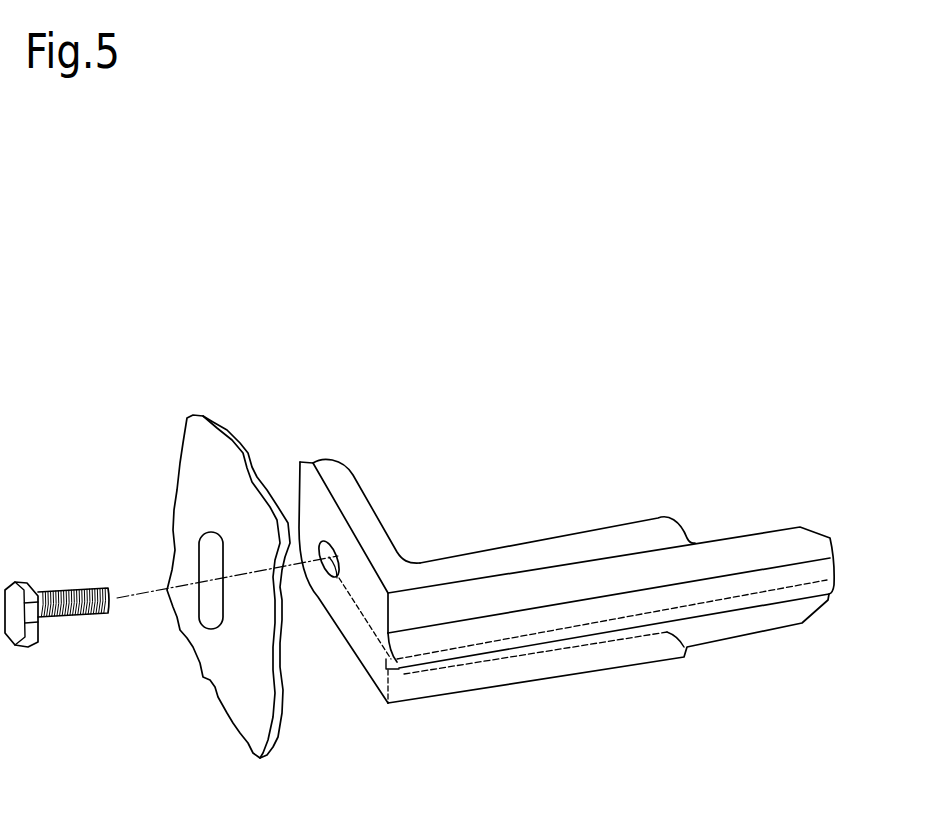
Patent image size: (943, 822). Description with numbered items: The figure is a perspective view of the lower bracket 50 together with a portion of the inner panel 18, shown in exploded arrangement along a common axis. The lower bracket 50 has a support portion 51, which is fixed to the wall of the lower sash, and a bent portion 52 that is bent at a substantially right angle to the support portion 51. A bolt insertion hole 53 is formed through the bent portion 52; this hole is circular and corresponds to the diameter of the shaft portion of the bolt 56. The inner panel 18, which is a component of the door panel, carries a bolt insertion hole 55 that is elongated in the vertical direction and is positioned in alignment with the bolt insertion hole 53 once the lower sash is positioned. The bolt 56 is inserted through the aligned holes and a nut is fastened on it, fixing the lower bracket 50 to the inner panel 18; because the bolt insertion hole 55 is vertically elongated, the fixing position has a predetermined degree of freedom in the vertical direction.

The inner panel 18 is at (200, 586).
The lower bracket 50 is at (566, 599).
The support portion 51 is at (622, 577).
The bent portion 52 is at (361, 599).
The bolt insertion hole 53 is at (333, 578).
The bolt insertion hole 55 is at (208, 567).
The bolt 56 is at (52, 596).